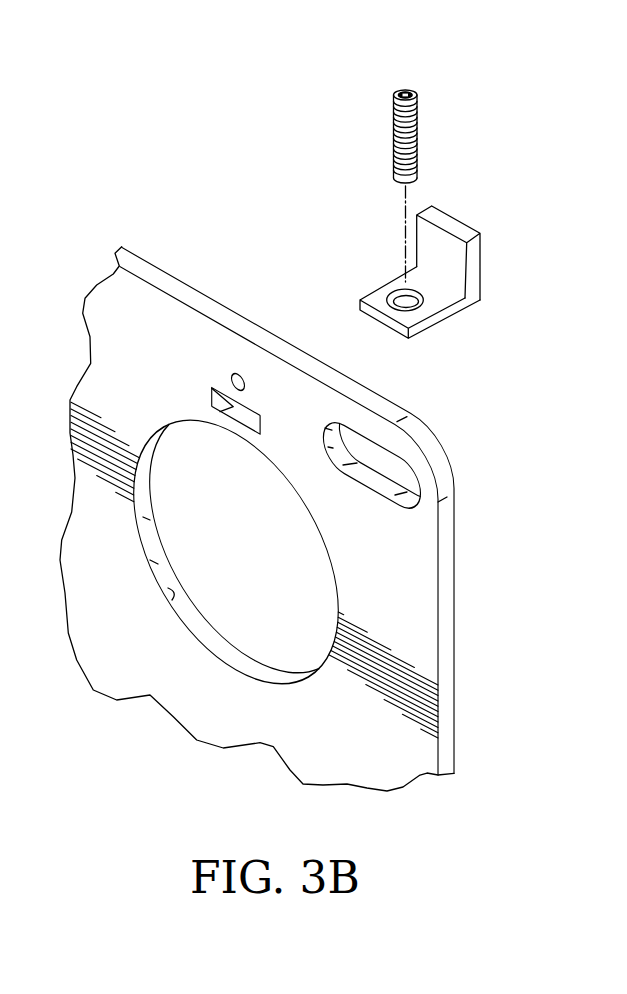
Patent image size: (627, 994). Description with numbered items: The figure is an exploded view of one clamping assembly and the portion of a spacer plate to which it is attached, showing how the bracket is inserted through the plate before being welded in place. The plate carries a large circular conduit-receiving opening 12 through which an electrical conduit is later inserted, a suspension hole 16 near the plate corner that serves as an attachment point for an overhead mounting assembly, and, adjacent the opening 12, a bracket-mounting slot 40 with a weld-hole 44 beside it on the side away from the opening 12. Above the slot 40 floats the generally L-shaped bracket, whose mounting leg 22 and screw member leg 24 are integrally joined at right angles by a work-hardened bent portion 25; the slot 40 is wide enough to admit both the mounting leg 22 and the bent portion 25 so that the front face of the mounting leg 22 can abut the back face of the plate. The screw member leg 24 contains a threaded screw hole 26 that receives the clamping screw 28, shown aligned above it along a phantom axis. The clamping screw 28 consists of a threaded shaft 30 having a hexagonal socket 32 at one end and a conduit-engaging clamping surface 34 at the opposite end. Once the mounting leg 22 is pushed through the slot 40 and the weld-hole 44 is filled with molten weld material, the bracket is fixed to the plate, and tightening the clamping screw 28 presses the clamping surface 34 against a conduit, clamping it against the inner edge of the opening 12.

The conduit-receiving opening 12 is at (175, 613).
The suspension hole 16 is at (405, 493).
The mounting leg 22 is at (470, 226).
The screw member leg 24 is at (373, 315).
The bent portion 25 is at (477, 301).
The threaded screw hole 26 is at (412, 303).
The clamping screw 28 is at (369, 138).
The threaded shaft 30 is at (418, 128).
The hexagonal socket 32 is at (405, 93).
The conduit-engaging clamping surface 34 is at (418, 175).
The bracket-mounting slot 40 is at (210, 412).
The weld-hole 44 is at (230, 382).